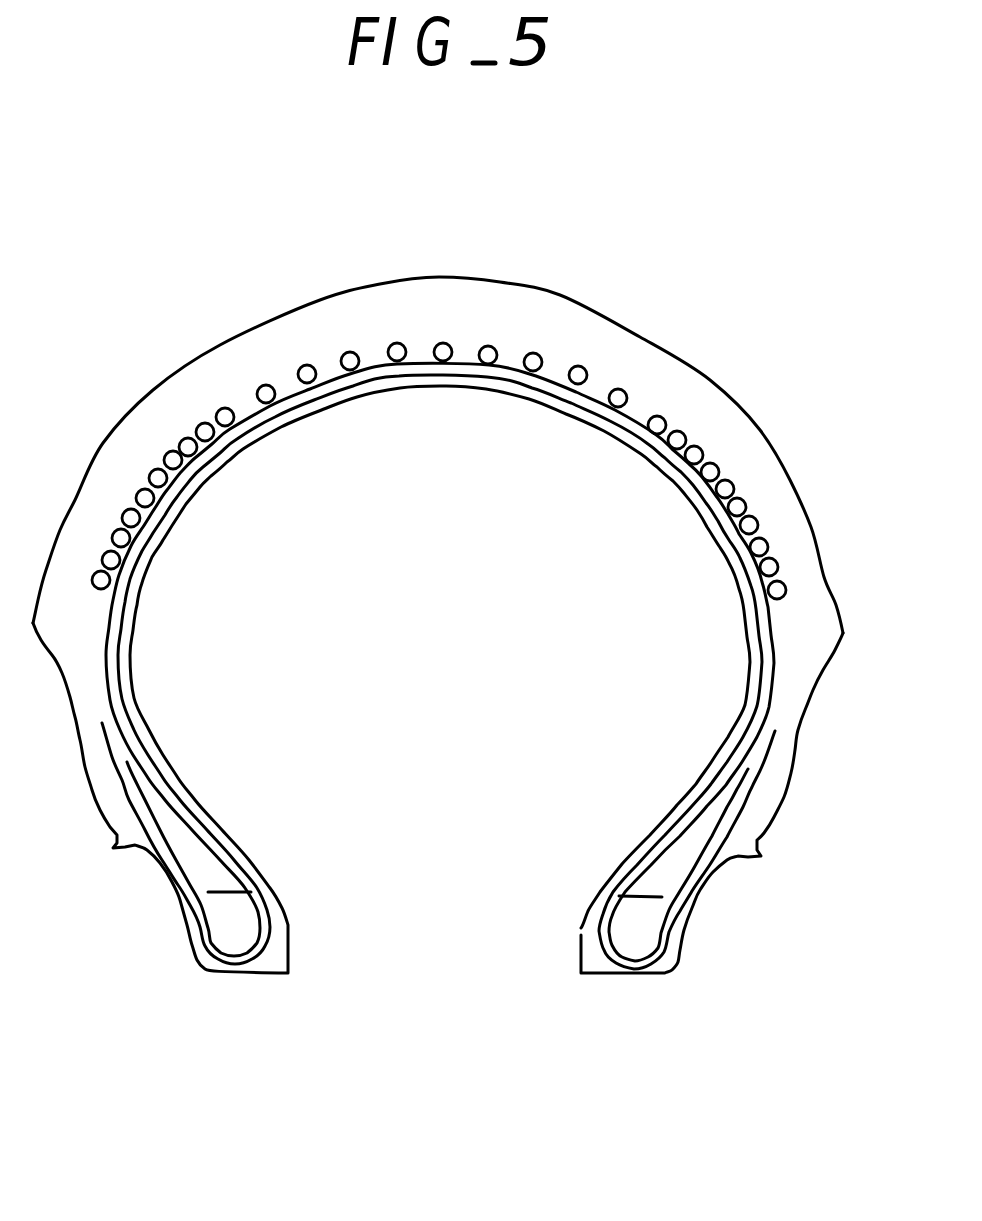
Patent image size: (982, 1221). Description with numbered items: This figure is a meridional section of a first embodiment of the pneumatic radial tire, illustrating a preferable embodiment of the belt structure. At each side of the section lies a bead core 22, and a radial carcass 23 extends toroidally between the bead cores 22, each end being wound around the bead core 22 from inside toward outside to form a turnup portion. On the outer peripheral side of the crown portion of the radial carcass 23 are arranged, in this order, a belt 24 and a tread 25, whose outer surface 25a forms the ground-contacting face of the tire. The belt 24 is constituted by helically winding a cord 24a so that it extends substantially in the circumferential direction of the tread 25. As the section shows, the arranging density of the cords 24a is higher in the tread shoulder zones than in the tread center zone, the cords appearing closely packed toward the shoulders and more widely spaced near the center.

The bead core 22 is at (246, 922).
The radial carcass 23 is at (120, 638).
The belt 24 is at (744, 483).
The cord 24a is at (656, 423).
The tread 25 is at (233, 345).
The tread surface 25a is at (451, 277).